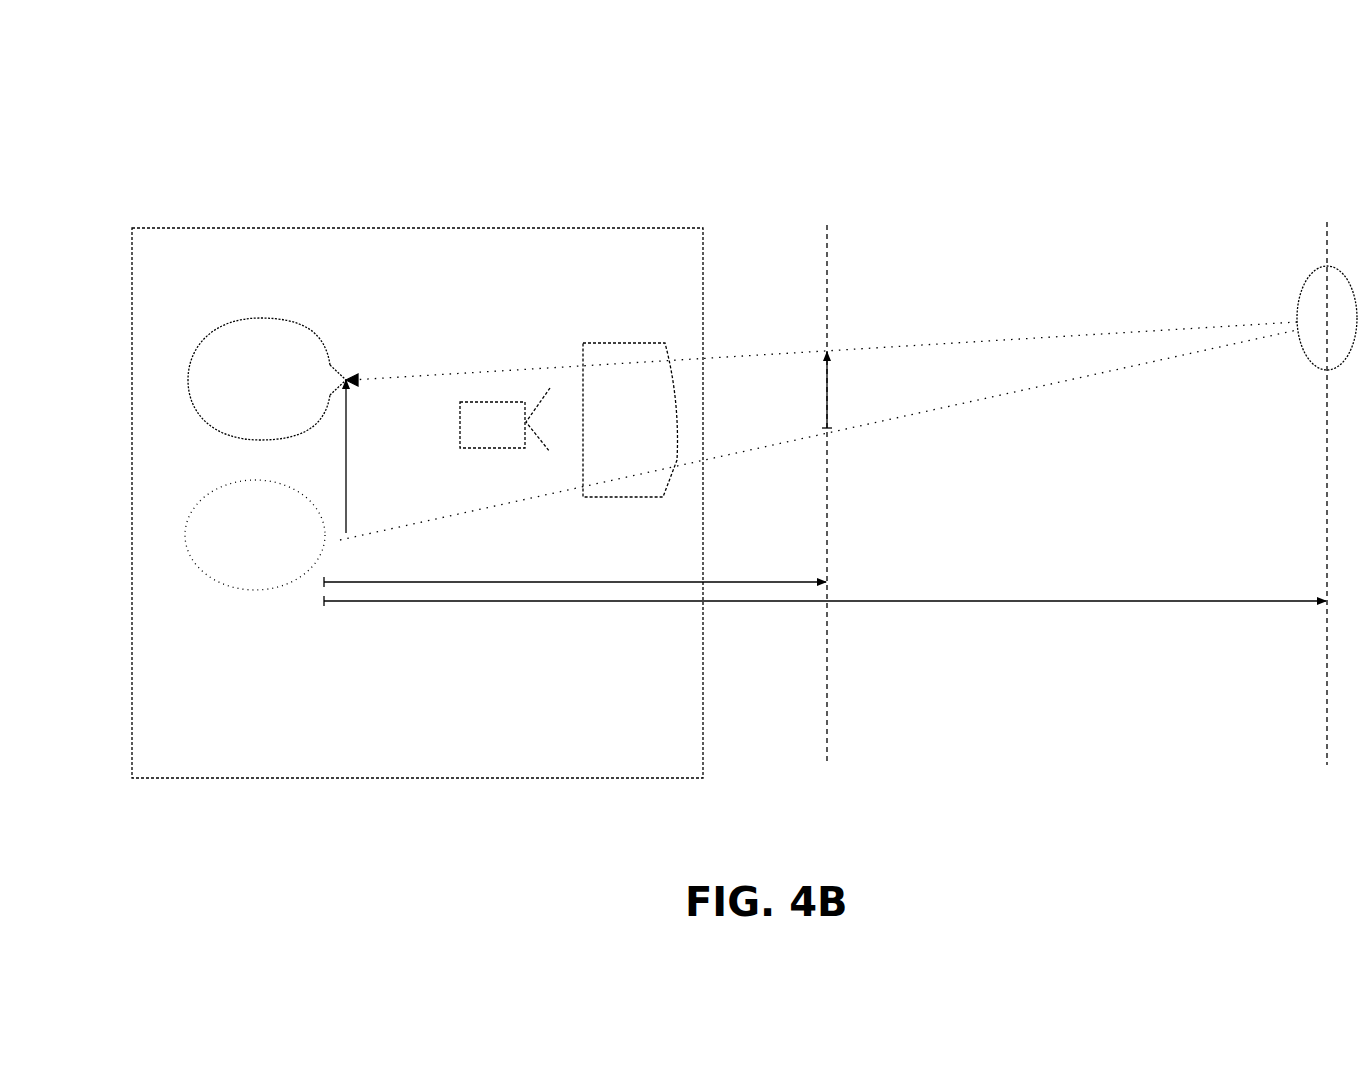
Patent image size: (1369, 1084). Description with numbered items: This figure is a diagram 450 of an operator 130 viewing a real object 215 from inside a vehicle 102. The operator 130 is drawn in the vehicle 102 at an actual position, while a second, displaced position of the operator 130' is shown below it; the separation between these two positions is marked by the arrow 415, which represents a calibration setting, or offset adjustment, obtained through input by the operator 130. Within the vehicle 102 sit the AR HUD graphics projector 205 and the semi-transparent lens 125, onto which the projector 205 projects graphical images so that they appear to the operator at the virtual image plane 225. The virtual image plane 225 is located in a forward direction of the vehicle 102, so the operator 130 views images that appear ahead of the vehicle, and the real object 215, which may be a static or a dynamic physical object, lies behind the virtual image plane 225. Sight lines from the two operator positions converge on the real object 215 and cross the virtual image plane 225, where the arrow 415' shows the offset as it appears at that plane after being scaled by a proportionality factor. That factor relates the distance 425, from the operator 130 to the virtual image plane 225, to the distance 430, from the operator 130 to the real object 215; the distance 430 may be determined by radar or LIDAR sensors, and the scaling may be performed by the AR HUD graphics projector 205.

The diagram 450 is at (160, 112).
The vehicle 102 is at (330, 272).
The operator 130 is at (267, 379).
The operator 130' is at (255, 535).
The arrow 415 is at (380, 456).
The AR HUD graphics projector 205 is at (512, 434).
The semi-transparent lens 125 is at (585, 345).
The virtual image plane 225 is at (827, 250).
The scaled arrow 415' is at (860, 390).
The real object 215 is at (1325, 264).
The distance 425 is at (560, 580).
The distance 430 is at (1115, 599).